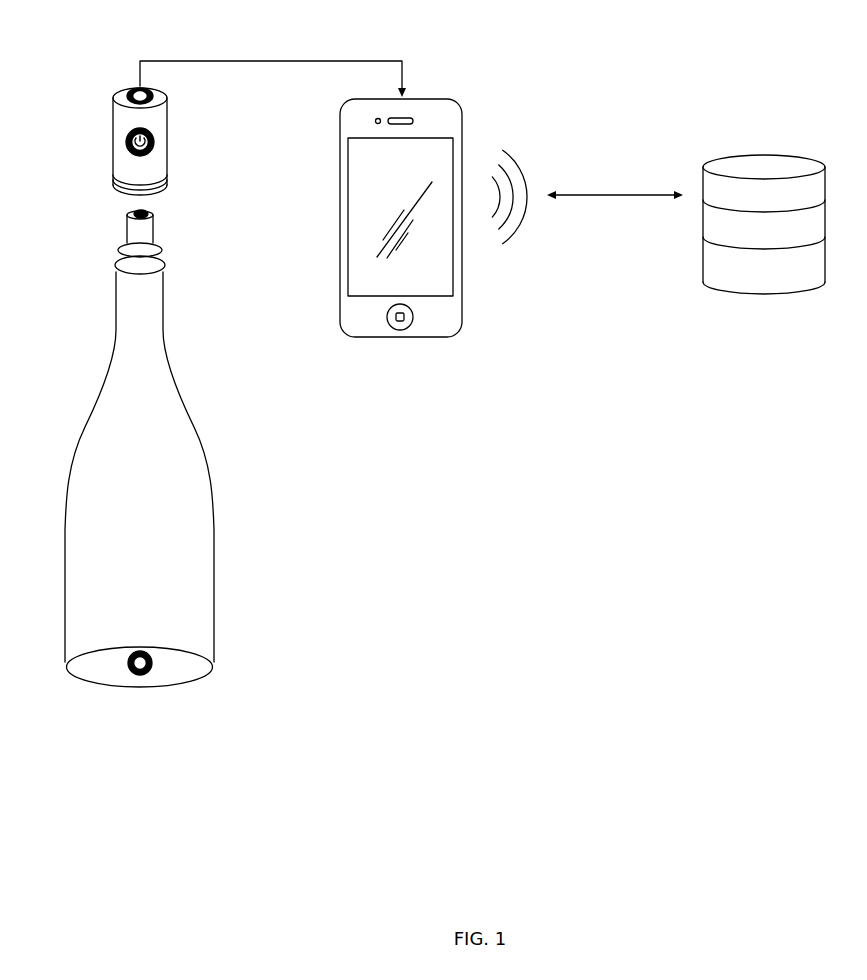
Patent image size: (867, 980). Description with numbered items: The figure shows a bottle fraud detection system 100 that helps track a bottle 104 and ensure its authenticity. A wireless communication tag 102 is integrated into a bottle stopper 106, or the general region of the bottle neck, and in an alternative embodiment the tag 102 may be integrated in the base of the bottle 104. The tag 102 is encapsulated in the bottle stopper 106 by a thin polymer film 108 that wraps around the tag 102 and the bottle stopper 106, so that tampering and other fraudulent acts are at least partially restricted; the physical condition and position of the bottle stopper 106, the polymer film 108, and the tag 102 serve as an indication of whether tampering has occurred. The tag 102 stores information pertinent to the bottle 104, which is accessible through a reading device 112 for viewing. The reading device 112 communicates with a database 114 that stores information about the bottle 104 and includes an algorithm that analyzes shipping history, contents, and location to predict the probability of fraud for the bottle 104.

The bottle fraud detection system 100 is at (588, 672).
The wireless communication tag 102 is at (137, 88).
The bottle 104 is at (214, 518).
The bottle stopper 106 is at (113, 108).
The polymer film 108 is at (154, 92).
The reading device 112 is at (348, 197).
The database 114 is at (757, 296).